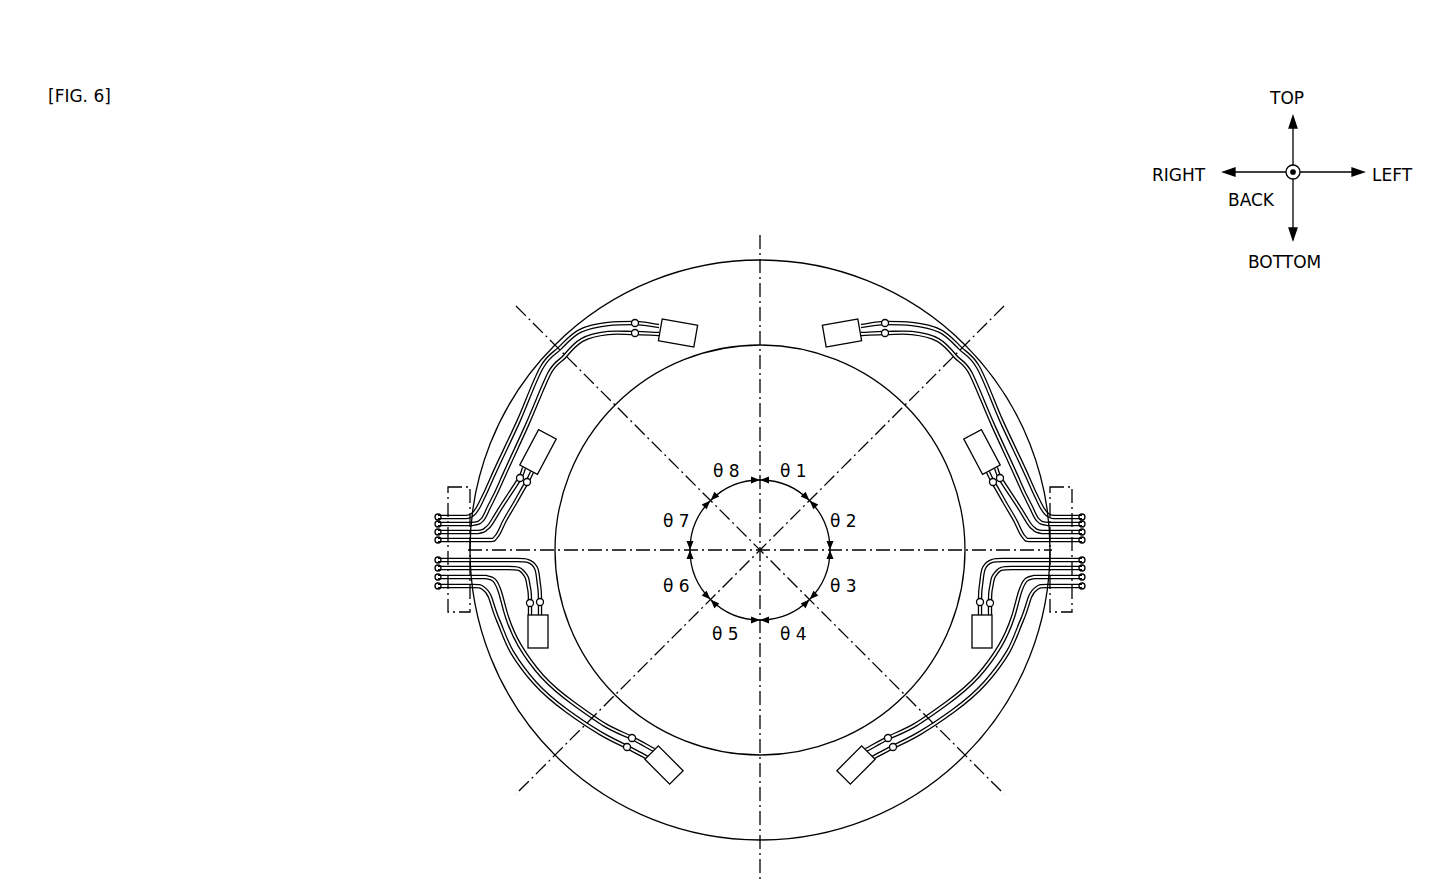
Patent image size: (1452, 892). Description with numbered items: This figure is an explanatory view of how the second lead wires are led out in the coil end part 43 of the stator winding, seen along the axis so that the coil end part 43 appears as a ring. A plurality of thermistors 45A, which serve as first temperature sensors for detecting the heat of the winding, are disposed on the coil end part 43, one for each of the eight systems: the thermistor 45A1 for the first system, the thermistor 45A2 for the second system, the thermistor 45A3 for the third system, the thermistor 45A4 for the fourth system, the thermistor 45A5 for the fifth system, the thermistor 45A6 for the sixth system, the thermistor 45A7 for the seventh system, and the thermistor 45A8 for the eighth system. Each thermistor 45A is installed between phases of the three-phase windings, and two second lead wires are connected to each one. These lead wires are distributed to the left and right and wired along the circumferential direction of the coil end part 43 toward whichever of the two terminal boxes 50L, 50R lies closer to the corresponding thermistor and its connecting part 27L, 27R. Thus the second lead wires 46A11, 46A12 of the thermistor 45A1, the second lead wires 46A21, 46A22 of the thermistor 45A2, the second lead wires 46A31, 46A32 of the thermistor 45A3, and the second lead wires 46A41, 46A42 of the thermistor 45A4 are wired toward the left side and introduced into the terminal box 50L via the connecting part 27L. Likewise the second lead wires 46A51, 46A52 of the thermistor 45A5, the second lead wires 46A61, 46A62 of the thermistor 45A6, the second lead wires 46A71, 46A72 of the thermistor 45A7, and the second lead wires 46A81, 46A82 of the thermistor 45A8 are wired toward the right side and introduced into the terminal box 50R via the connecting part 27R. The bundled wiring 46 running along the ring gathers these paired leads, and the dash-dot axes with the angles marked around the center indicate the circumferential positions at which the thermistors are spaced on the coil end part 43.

The coil end part 43 is at (779, 275).
The thermistor 45A is at (826, 268).
The thermistor for the first system 45A1 is at (835, 310).
The thermistor for the second system 45A2 is at (985, 450).
The thermistor for the third system 45A3 is at (988, 637).
The thermistor for the fourth system 45A4 is at (850, 775).
The thermistor for the fifth system 45A5 is at (670, 775).
The thermistor for the sixth system 45A6 is at (532, 637).
The thermistor for the seventh system 45A7 is at (535, 450).
The thermistor for the eighth system 45A8 is at (685, 310).
The wiring 46 is at (758, 553).
The second lead wire 46A11 is at (898, 320).
The second lead wire 46A12 is at (930, 337).
The second lead wire 46A21 is at (1010, 492).
The second lead wire 46A22 is at (1005, 505).
The second lead wire 46A31 is at (1012, 578).
The second lead wire 46A32 is at (984, 592).
The second lead wire 46A41 is at (930, 727).
The second lead wire 46A42 is at (898, 752).
The second lead wire 46A51 is at (590, 727).
The second lead wire 46A52 is at (622, 752).
The second lead wire 46A61 is at (508, 578).
The second lead wire 46A62 is at (536, 592).
The second lead wire 46A71 is at (510, 492).
The second lead wire 46A72 is at (515, 505).
The second lead wire 46A81 is at (622, 320).
The second lead wire 46A82 is at (590, 337).
The connecting part 27L is at (1072, 488).
The connecting part 27R is at (448, 488).
The terminal box 50L is at (1157, 550).
The terminal box 50R is at (332, 550).